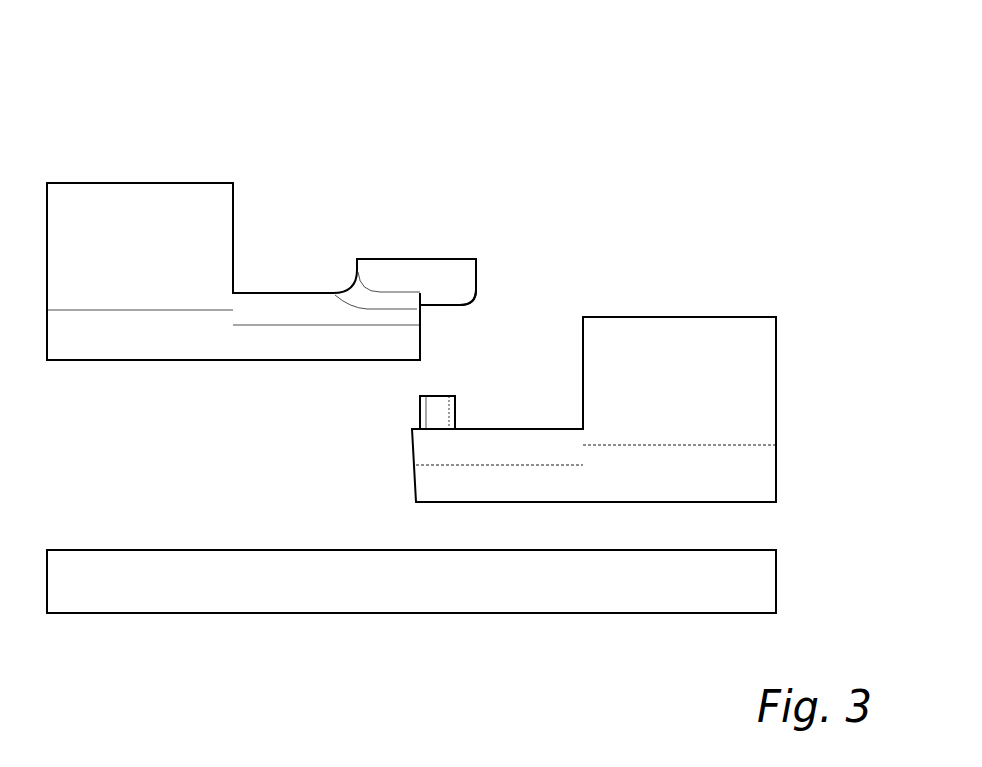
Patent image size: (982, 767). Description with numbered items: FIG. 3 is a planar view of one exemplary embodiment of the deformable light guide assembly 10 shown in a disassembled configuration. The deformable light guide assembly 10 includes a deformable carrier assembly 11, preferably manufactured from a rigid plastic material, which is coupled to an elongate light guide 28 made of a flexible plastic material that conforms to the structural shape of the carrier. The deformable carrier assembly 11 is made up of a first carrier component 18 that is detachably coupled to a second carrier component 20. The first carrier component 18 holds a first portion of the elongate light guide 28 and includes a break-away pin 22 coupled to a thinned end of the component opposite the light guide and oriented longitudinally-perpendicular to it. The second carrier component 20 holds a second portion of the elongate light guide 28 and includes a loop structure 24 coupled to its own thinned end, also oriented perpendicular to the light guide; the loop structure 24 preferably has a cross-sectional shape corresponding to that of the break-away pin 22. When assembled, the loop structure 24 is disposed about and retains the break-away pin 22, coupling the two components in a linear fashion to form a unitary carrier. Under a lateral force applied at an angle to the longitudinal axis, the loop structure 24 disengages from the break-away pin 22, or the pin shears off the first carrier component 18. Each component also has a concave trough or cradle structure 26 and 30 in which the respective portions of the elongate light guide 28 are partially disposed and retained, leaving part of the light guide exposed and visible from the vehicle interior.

The deformable light guide assembly 10 is at (407, 213).
The deformable carrier assembly 11 is at (517, 380).
The first carrier component 18 is at (663, 317).
The second carrier component 20 is at (180, 183).
The break-away pin 22 is at (458, 380).
The loop structure 24 is at (453, 272).
The concave trough or cradle structure 26 is at (747, 477).
The elongate light guide 28 is at (343, 582).
The concave trough or cradle structure 30 is at (106, 338).